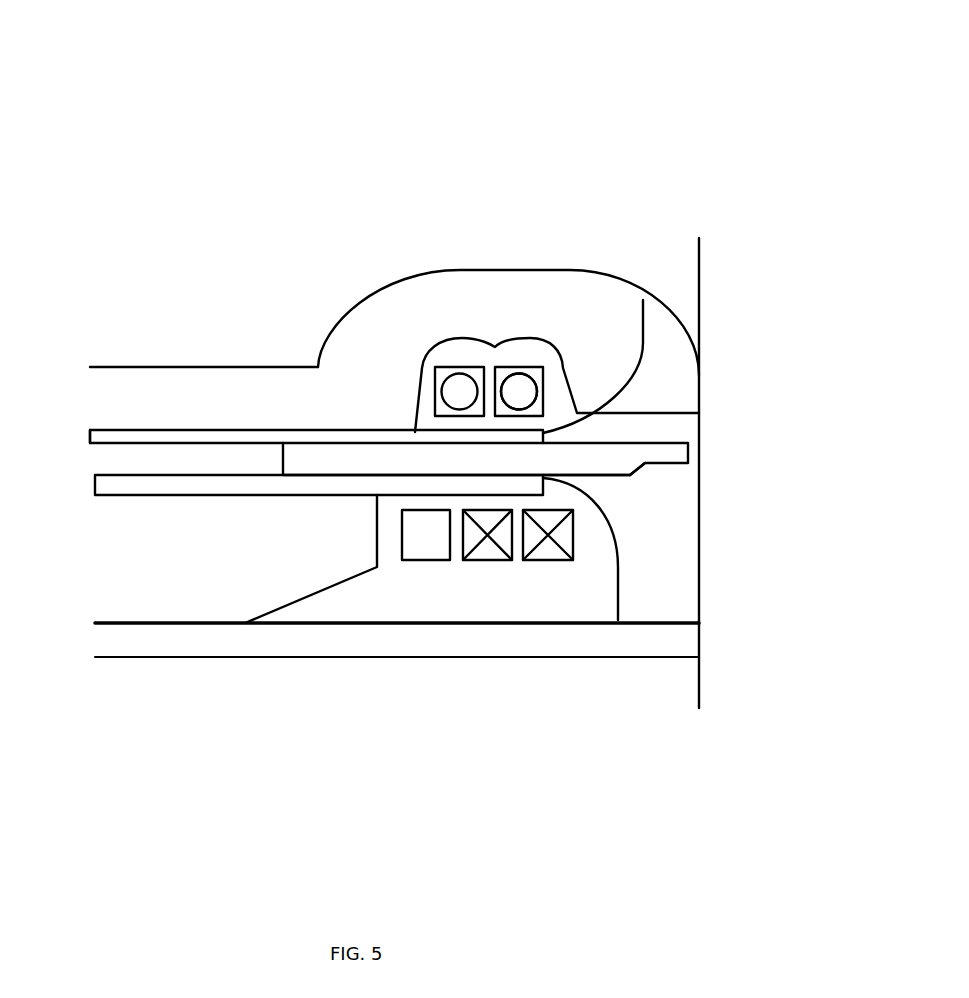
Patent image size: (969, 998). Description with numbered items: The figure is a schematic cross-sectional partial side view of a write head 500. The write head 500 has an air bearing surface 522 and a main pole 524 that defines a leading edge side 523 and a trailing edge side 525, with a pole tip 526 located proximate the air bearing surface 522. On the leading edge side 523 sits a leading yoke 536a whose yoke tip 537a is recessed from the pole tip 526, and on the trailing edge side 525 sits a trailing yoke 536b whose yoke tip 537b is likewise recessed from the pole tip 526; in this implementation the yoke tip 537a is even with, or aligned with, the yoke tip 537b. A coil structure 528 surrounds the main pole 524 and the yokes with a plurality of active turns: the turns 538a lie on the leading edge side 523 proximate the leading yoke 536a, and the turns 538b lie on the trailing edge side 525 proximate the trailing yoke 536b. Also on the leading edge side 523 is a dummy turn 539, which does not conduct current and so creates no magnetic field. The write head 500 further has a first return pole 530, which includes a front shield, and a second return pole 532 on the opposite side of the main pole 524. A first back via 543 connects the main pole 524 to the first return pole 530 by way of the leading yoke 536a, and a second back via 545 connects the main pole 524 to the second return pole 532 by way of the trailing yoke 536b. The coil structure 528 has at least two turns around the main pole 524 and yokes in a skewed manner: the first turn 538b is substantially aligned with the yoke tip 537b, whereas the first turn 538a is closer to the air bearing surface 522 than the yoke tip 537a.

The write head 500 is at (128, 84).
The air bearing surface 522 is at (700, 494).
The leading edge side 523 is at (623, 477).
The main pole 524 is at (612, 485).
The trailing edge side 525 is at (298, 420).
The pole tip 526 is at (690, 444).
The coil structure 528 is at (522, 357).
The first return pole 530 is at (166, 651).
The second return pole 532 is at (231, 406).
The leading yoke 536a is at (157, 495).
The trailing yoke 536b is at (138, 430).
The yoke tip 537a is at (618, 620).
The yoke tip 537b is at (643, 300).
The active turns 538a is at (545, 560).
The active turns 538b is at (509, 367).
The dummy turn 539 is at (427, 560).
The first back via 543 is at (377, 548).
The second back via 545 is at (412, 385).